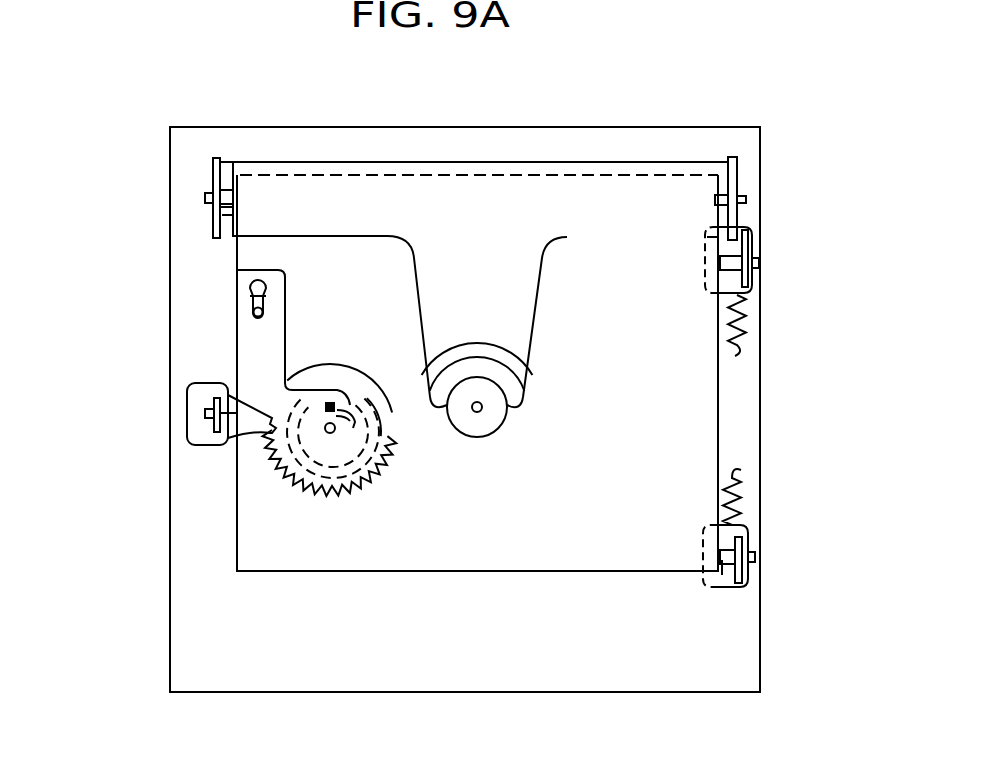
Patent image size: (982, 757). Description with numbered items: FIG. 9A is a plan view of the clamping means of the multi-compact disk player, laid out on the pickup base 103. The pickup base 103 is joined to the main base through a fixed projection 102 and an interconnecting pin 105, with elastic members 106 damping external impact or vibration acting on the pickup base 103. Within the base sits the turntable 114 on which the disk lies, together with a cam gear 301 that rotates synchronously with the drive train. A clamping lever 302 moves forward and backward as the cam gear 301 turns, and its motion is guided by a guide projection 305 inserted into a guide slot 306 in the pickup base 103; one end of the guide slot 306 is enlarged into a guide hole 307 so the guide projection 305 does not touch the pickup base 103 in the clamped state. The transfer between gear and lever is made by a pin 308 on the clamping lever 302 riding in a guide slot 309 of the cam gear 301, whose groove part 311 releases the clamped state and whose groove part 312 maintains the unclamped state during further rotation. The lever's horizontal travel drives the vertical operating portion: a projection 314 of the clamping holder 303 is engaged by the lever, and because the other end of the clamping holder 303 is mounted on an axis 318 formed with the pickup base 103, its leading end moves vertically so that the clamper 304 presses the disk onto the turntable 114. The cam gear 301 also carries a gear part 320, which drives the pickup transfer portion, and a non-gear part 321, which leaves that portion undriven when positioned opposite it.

The fixed projection 102 is at (738, 573).
The pickup base 103 is at (718, 413).
The interconnecting pin 105 is at (727, 572).
The elastic members 106 is at (738, 490).
The turntable 114 is at (493, 465).
The cam gear 301 is at (343, 377).
The clamping lever 302 is at (245, 270).
The clamping holder 303 is at (563, 192).
The clamper 304 is at (515, 427).
The guide projection 305 is at (255, 313).
The guide slot 306 is at (253, 297).
The guide hole 307 is at (259, 280).
The pin 308 is at (335, 405).
The guide slot 309 is at (300, 465).
The groove part 311 is at (270, 435).
The groove part 312 is at (350, 413).
The projection 314 is at (220, 222).
The axis 318 is at (223, 197).
The gear part 320 is at (335, 492).
The non-gear part 321 is at (315, 362).